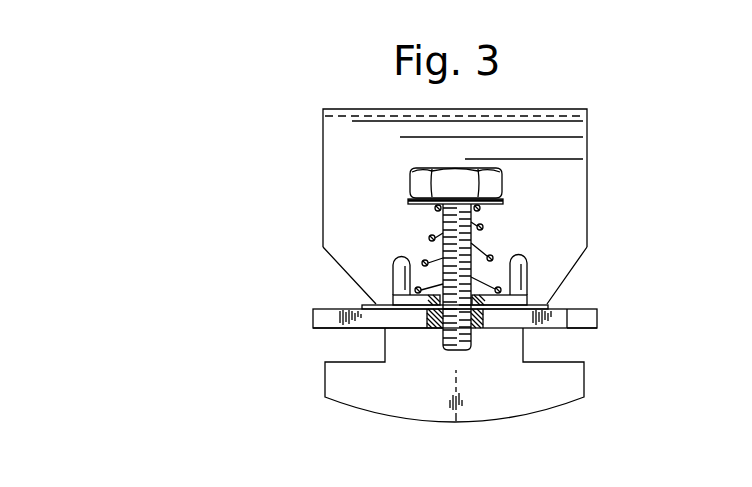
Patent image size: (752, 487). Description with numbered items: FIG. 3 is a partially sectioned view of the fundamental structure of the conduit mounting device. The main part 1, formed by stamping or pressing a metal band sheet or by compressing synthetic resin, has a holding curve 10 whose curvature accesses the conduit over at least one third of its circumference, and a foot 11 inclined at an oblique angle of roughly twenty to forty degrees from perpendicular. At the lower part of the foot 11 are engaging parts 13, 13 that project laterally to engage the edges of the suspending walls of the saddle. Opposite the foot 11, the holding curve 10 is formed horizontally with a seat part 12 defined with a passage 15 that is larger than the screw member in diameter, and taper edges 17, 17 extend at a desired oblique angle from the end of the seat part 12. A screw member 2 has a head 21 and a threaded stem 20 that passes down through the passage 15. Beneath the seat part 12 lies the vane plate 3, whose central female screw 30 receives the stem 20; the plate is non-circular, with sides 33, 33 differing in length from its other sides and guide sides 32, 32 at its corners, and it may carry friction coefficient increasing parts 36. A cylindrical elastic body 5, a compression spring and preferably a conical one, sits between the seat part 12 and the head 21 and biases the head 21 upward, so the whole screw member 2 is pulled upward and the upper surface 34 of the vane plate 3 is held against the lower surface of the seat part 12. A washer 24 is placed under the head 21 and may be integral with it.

The main part 1 is at (337, 194).
The screw member 2 is at (442, 228).
The vane plate 3 is at (313, 313).
The cylindrical elastic body 5 is at (495, 228).
The holding curve 10 is at (573, 145).
The foot 11 is at (505, 345).
The seat part 12 is at (520, 262).
The engaging parts 13 is at (353, 362).
The passage 15 is at (393, 280).
The taper edges 17 is at (393, 277).
The stem 20 is at (450, 345).
The head 21 is at (412, 170).
The washer 24 is at (503, 201).
The female screw 30 is at (437, 330).
The guide sides 32 is at (590, 317).
The sides 33 is at (372, 328).
The upper surface 34 is at (553, 307).
The friction coefficient increasing parts 36 is at (368, 304).